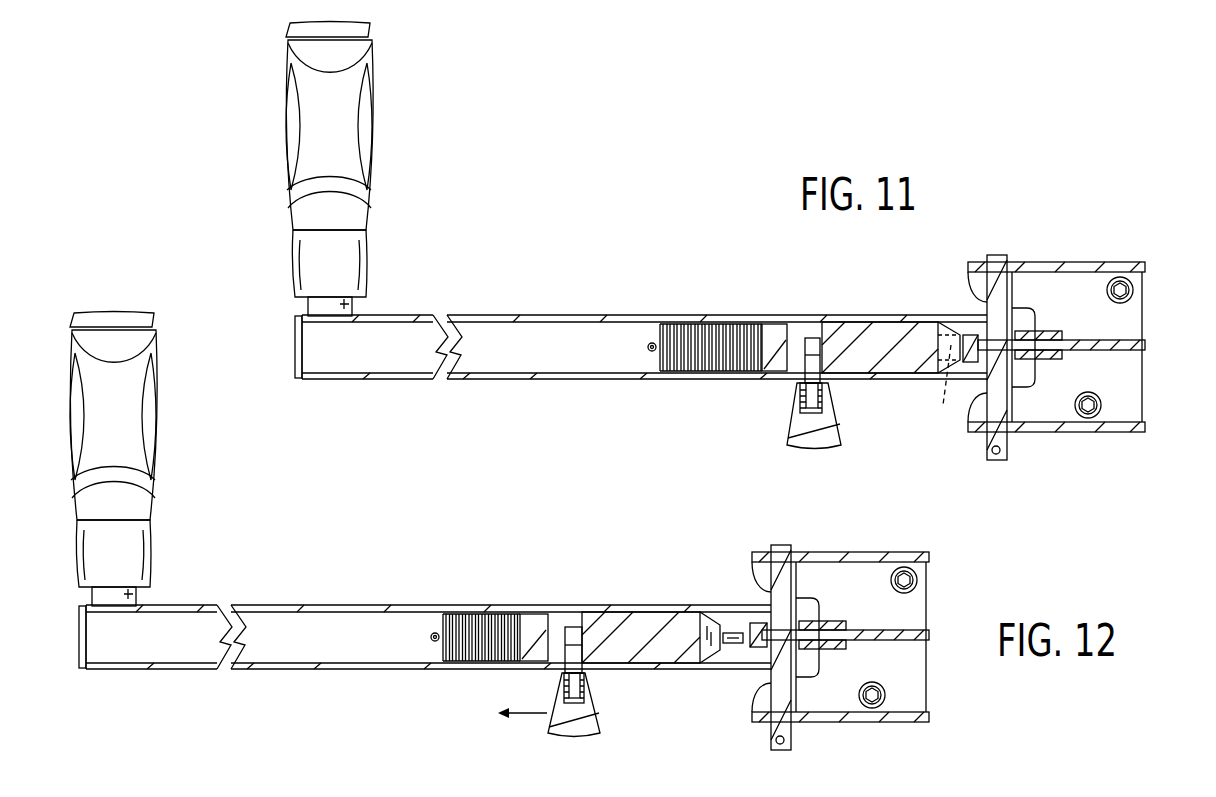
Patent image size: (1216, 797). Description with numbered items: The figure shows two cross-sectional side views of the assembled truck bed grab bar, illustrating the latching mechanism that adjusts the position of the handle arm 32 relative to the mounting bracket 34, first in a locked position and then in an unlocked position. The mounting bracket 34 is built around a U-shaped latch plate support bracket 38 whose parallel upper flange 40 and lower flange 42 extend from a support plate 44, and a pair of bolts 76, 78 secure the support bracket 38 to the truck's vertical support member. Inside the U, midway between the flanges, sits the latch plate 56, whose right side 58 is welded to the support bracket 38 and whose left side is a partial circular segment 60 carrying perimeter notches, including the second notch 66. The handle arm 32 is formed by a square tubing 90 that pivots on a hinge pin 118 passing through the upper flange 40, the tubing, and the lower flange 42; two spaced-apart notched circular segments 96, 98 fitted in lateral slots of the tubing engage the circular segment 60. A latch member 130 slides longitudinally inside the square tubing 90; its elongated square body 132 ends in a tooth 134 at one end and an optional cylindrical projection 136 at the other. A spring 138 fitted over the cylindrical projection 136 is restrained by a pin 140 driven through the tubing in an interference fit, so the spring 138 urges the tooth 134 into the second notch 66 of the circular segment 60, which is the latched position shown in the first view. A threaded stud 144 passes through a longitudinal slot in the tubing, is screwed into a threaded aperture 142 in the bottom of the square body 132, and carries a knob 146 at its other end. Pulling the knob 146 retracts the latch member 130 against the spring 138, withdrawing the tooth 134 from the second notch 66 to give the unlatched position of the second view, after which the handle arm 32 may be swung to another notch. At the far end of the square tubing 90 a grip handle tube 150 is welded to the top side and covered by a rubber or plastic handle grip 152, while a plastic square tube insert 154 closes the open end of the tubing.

In FIG. 11, the handle arm 32 is at (628, 314).
In FIG. 12, the handle arm 32 is at (392, 574).
In FIG. 11, the mounting bracket 34 is at (1105, 434).
In FIG. 12, the mounting bracket 34 is at (840, 737).
In FIG. 11, the latch plate support bracket 38 is at (1027, 435).
In FIG. 12, the latch plate support bracket 38 is at (807, 676).
In FIG. 11, the upper flange 40 is at (1085, 262).
In FIG. 12, the upper flange 40 is at (840, 549).
In FIG. 11, the lower flange 42 is at (1134, 431).
In FIG. 12, the lower flange 42 is at (940, 739).
In FIG. 11, the support plate 44 is at (1125, 401).
In FIG. 12, the support plate 44 is at (937, 640).
In FIG. 11, the latch plate 56 is at (1100, 352).
In FIG. 12, the latch plate 56 is at (924, 662).
In FIG. 11, the right side of the latch plate 58 is at (1128, 338).
In FIG. 12, the right side of the latch plate 58 is at (870, 616).
In FIG. 11, the partial circular segment 60 is at (970, 335).
In FIG. 12, the partial circular segment 60 is at (747, 588).
In FIG. 11, the second notch 66 is at (945, 386).
In FIG. 12, the second notch 66 is at (722, 677).
In FIG. 11, the bolt 76 is at (1133, 290).
In FIG. 12, the bolt 76 is at (935, 574).
In FIG. 11, the bolt 78 is at (1094, 410).
In FIG. 12, the bolt 78 is at (892, 728).
In FIG. 11, the square tubing 90 is at (500, 380).
In FIG. 12, the square tubing 90 is at (428, 658).
In FIG. 11, the notched circular segment 96 is at (1040, 340).
In FIG. 12, the notched circular segment 96 is at (836, 631).
In FIG. 11, the notched circular segment 98 is at (1045, 362).
In FIG. 12, the notched circular segment 98 is at (827, 694).
In FIG. 11, the hinge pin 118 is at (997, 257).
In FIG. 12, the hinge pin 118 is at (809, 628).
In FIG. 11, the latch member 130 is at (910, 378).
In FIG. 12, the latch member 130 is at (697, 711).
In FIG. 11, the square body 132 is at (868, 325).
In FIG. 12, the square body 132 is at (641, 600).
In FIG. 11, the tooth 134 is at (955, 336).
In FIG. 12, the tooth 134 is at (701, 599).
In FIG. 11, the cylindrical projection 136 is at (789, 328).
In FIG. 12, the cylindrical projection 136 is at (550, 609).
In FIG. 11, the spring 138 is at (718, 373).
In FIG. 12, the spring 138 is at (479, 666).
In FIG. 11, the pin 140 is at (651, 353).
In FIG. 12, the pin 140 is at (403, 672).
In FIG. 11, the threaded aperture 142 is at (814, 338).
In FIG. 12, the threaded aperture 142 is at (597, 610).
In FIG. 11, the threaded stud 144 is at (828, 381).
In FIG. 12, the threaded stud 144 is at (604, 690).
In FIG. 11, the knob 146 is at (820, 443).
In FIG. 12, the knob 146 is at (564, 724).
In FIG. 11, the grip handle tube 150 is at (350, 308).
In FIG. 12, the grip handle tube 150 is at (164, 585).
In FIG. 11, the handle grip 152 is at (370, 127).
In FIG. 12, the handle grip 152 is at (156, 450).
In FIG. 11, the plastic square tube insert 154 is at (299, 380).
In FIG. 12, the plastic square tube insert 154 is at (104, 659).